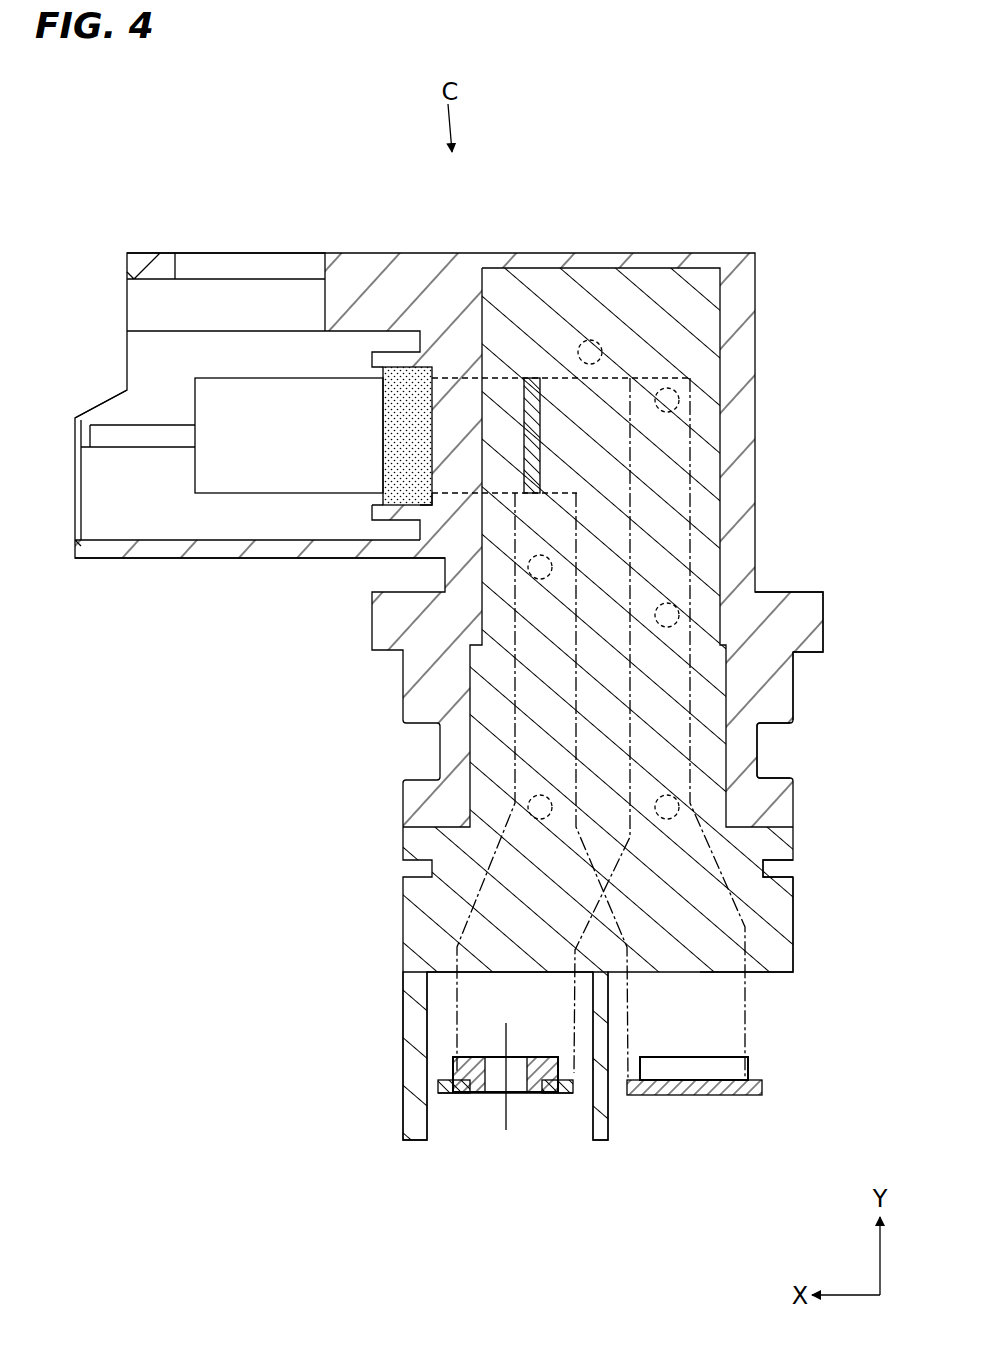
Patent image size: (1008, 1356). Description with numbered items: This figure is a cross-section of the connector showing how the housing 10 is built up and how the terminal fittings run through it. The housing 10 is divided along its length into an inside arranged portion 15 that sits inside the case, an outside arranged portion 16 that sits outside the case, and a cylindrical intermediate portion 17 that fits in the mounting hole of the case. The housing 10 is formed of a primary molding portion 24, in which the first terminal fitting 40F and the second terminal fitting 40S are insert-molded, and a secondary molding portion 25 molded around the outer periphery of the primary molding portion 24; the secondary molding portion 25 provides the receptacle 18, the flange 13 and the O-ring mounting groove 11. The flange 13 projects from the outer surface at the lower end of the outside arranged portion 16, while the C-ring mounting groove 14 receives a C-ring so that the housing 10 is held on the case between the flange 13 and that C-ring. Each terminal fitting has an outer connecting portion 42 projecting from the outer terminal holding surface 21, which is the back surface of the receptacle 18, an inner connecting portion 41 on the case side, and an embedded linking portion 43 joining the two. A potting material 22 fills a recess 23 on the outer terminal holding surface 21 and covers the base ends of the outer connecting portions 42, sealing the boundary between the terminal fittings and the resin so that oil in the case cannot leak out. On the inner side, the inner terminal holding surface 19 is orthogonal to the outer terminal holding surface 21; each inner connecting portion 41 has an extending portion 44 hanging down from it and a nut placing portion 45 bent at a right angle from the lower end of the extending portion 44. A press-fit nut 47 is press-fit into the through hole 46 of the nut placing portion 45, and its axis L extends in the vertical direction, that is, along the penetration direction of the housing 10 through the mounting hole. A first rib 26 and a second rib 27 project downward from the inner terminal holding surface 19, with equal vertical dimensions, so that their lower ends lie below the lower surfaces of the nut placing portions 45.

The housing 10 is at (744, 286).
The O-ring mounting groove 11 is at (773, 725).
The flange 13 is at (797, 617).
The C-ring mounting groove 14 is at (775, 862).
The inside arranged portion 15 is at (766, 952).
The outside arranged portion 16 is at (398, 270).
The intermediate portion 17 is at (775, 688).
The receptacle 18 is at (163, 547).
The inner terminal holding surface 19 is at (707, 973).
The outer terminal holding surface 21 is at (372, 511).
The potting material 22 is at (400, 447).
The recess 23 is at (428, 484).
The primary molding portion 24 is at (683, 347).
The secondary molding portion 25 is at (740, 402).
The first rib 26 is at (600, 1140).
The second rib 27 is at (408, 1112).
The second terminal fitting 40S is at (470, 936).
The first terminal fitting 40F is at (702, 910).
The inner connecting portion 41 is at (688, 1095).
The outer connecting portion 42 is at (254, 420).
The linking portion 43 is at (650, 695).
The extending portion 44 is at (468, 1013).
The nut placing portion 45 is at (452, 1093).
The through hole 46 is at (537, 1093).
The press-fit nut 47 is at (463, 1066).
The axis L is at (506, 1130).